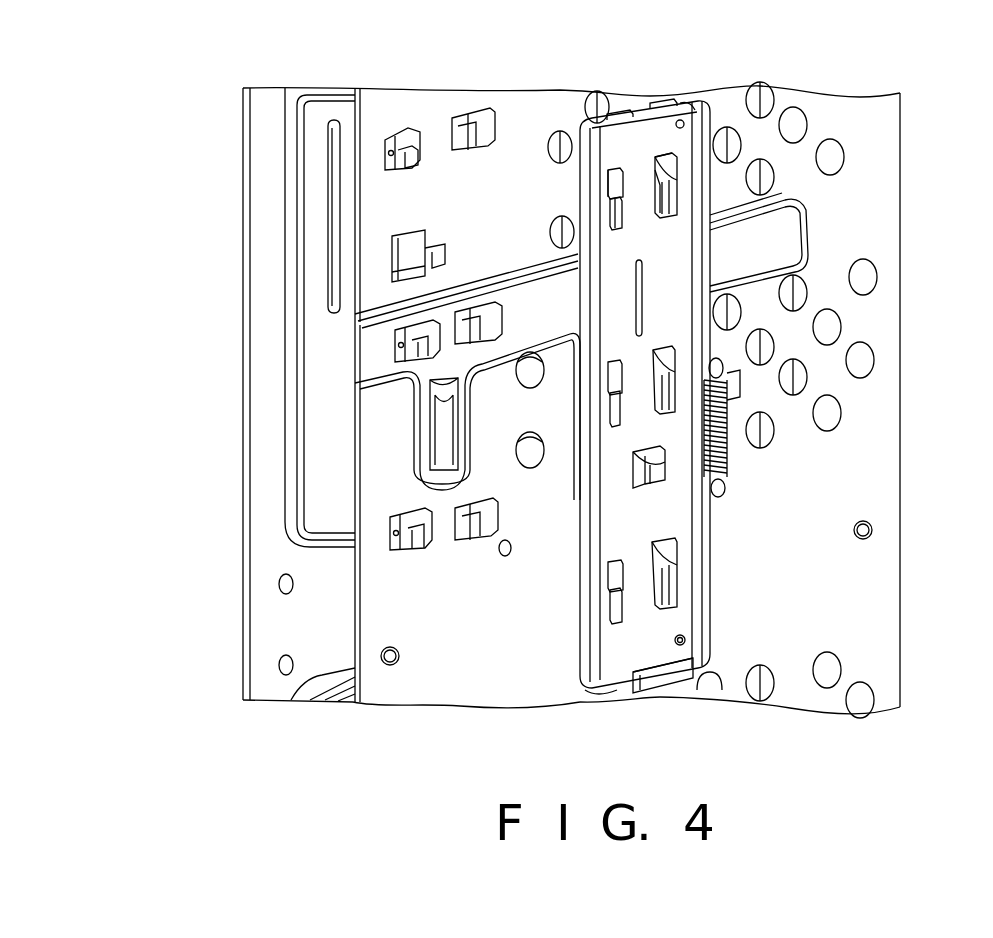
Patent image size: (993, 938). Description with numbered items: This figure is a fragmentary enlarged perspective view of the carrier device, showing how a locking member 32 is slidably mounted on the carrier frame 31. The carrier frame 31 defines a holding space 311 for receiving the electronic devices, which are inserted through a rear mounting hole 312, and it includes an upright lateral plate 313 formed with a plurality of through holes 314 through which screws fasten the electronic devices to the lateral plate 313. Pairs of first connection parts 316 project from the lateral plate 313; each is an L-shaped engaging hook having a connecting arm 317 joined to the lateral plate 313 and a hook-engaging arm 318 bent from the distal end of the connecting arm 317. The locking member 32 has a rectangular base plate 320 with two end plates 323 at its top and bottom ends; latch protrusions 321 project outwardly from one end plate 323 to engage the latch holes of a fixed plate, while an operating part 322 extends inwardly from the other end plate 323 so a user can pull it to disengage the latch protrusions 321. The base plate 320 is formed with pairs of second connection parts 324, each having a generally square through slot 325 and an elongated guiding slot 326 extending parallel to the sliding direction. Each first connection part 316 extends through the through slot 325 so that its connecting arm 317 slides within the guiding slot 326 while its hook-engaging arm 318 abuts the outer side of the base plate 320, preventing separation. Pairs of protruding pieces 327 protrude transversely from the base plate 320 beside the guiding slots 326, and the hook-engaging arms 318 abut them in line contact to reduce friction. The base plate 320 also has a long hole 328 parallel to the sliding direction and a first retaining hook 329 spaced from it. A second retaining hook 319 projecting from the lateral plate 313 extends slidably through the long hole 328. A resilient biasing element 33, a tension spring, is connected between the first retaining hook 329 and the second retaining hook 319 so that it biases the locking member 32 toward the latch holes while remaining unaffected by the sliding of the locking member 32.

The carrier frame 31 is at (340, 108).
The holding space 311 is at (302, 622).
The rear mounting hole 312 is at (253, 641).
The lateral plate 313 is at (383, 110).
The through holes 314 is at (507, 567).
The first connection parts 316 is at (410, 135).
The connecting arm 317 is at (397, 153).
The hook-engaging arm 318 is at (418, 158).
The second retaining hooks 319 is at (435, 260).
The locking members 32 is at (715, 247).
The base plate 320 is at (742, 379).
The latch protrusions 321 is at (620, 112).
The operating part 322 is at (660, 683).
The end plates 323 is at (680, 108).
The second connection parts 324 is at (692, 185).
The through slot 325 is at (663, 160).
The guiding slot 326 is at (700, 214).
The protruding pieces 327 is at (667, 207).
The long hole 328 is at (637, 307).
The first retaining hook 329 is at (655, 473).
The resilient biasing elements 33 is at (722, 450).